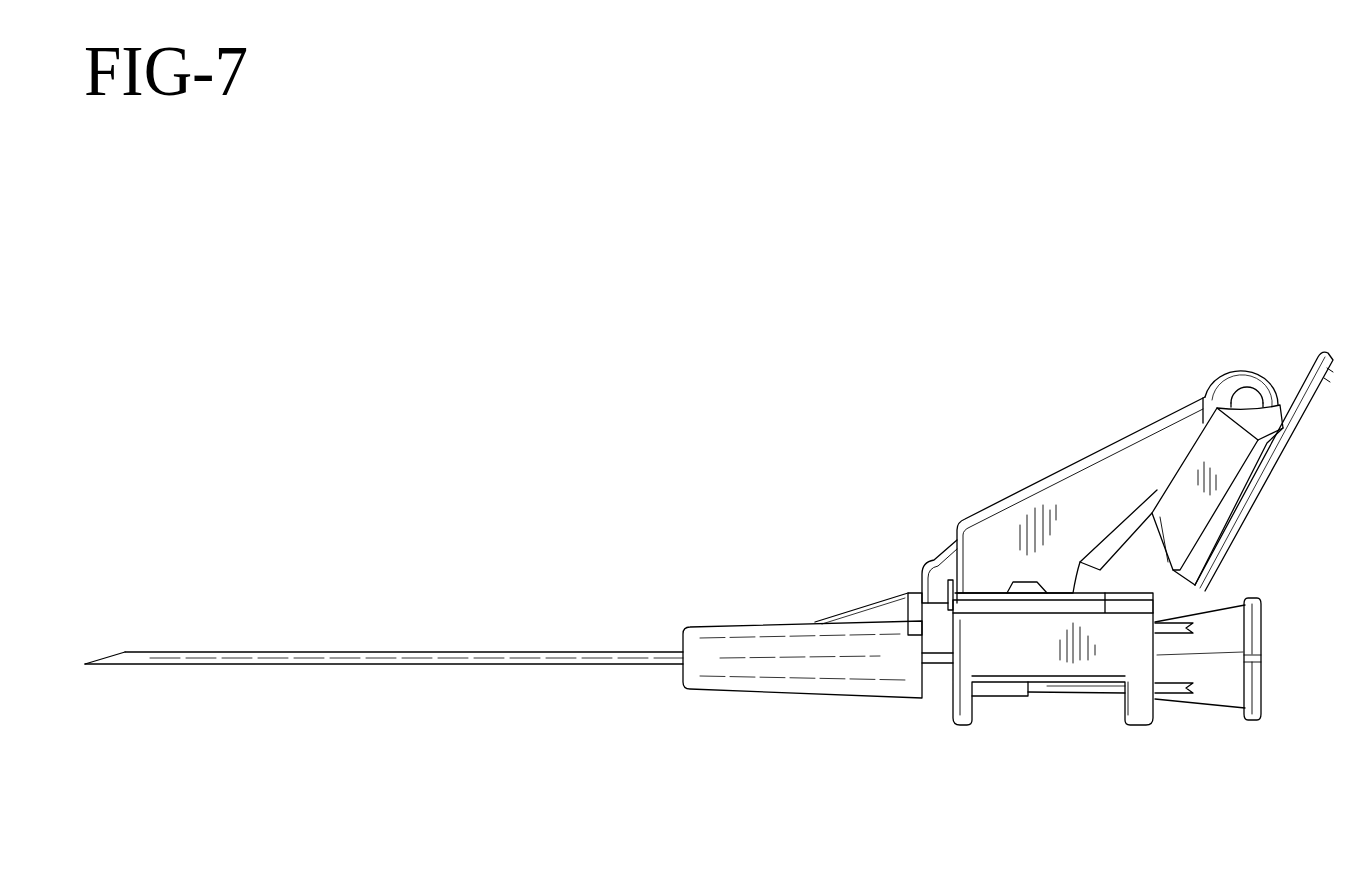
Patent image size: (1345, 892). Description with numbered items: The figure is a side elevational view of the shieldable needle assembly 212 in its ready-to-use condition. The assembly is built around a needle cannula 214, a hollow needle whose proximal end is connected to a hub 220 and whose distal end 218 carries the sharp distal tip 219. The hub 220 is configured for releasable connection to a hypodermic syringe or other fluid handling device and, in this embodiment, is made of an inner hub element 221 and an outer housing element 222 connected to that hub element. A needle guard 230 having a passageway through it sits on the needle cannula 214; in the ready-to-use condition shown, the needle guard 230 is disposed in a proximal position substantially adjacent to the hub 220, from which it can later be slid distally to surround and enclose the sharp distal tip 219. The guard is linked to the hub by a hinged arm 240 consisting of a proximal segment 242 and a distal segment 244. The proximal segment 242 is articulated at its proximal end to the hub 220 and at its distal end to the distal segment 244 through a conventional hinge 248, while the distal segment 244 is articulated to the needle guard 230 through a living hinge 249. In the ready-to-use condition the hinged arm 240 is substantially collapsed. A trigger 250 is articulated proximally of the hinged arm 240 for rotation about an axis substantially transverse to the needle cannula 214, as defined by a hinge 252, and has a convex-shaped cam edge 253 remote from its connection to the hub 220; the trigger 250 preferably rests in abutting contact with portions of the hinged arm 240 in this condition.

The shieldable needle assembly 212 is at (265, 375).
The needle cannula 214 is at (588, 657).
The distal end 218 is at (155, 660).
The sharp distal tip 219 is at (100, 663).
The needle guard 230 is at (718, 682).
The living hinge 249 is at (920, 590).
The outer housing element 222 is at (1002, 663).
The hub 220 is at (1135, 715).
The inner hub element 221 is at (1222, 688).
The hinged arm 240 is at (1003, 503).
The proximal segment 242 is at (1075, 467).
The distal segment 244 is at (940, 567).
The hinge 248 is at (1247, 390).
The trigger 250 is at (1258, 460).
The convex-shaped cam edge 253 is at (1327, 353).
The hinge 252 is at (1157, 600).